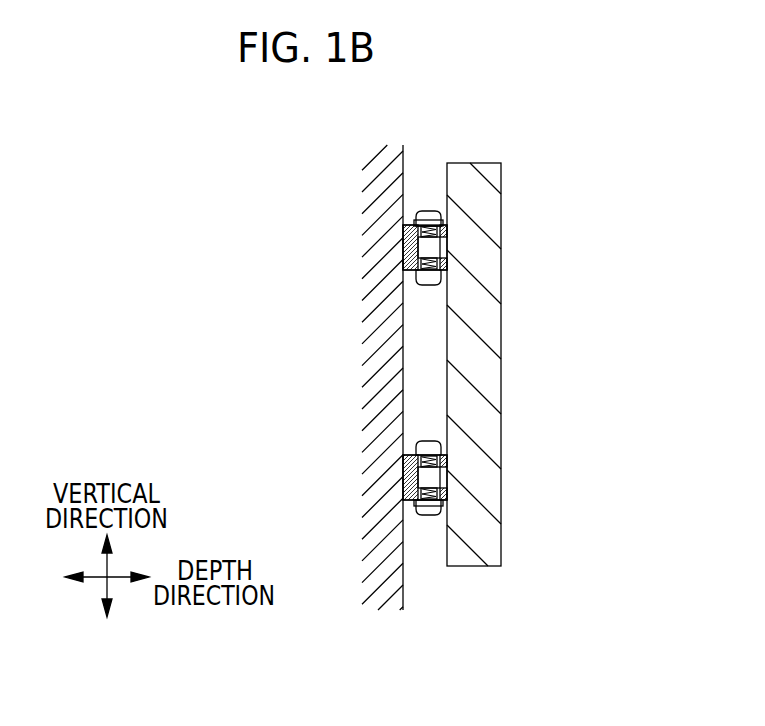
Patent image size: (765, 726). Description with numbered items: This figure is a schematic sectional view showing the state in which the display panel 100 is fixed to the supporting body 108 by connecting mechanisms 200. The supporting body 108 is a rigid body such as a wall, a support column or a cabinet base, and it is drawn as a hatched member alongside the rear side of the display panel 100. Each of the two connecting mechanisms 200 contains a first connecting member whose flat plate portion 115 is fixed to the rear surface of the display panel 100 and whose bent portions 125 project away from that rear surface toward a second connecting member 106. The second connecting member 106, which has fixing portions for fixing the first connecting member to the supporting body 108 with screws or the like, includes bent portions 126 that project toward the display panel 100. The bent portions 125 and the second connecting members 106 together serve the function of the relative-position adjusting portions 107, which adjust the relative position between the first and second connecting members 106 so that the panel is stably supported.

The display panel 100 is at (481, 341).
The supporting body 108 is at (372, 373).
The connecting mechanisms 200 is at (447, 100).
The second connecting member 106 is at (413, 212).
The relative-position adjusting portion 107 is at (431, 211).
The flat plate portion 115 is at (441, 246).
The bent portion 125 is at (404, 269).
The bent portion 126 is at (404, 242).